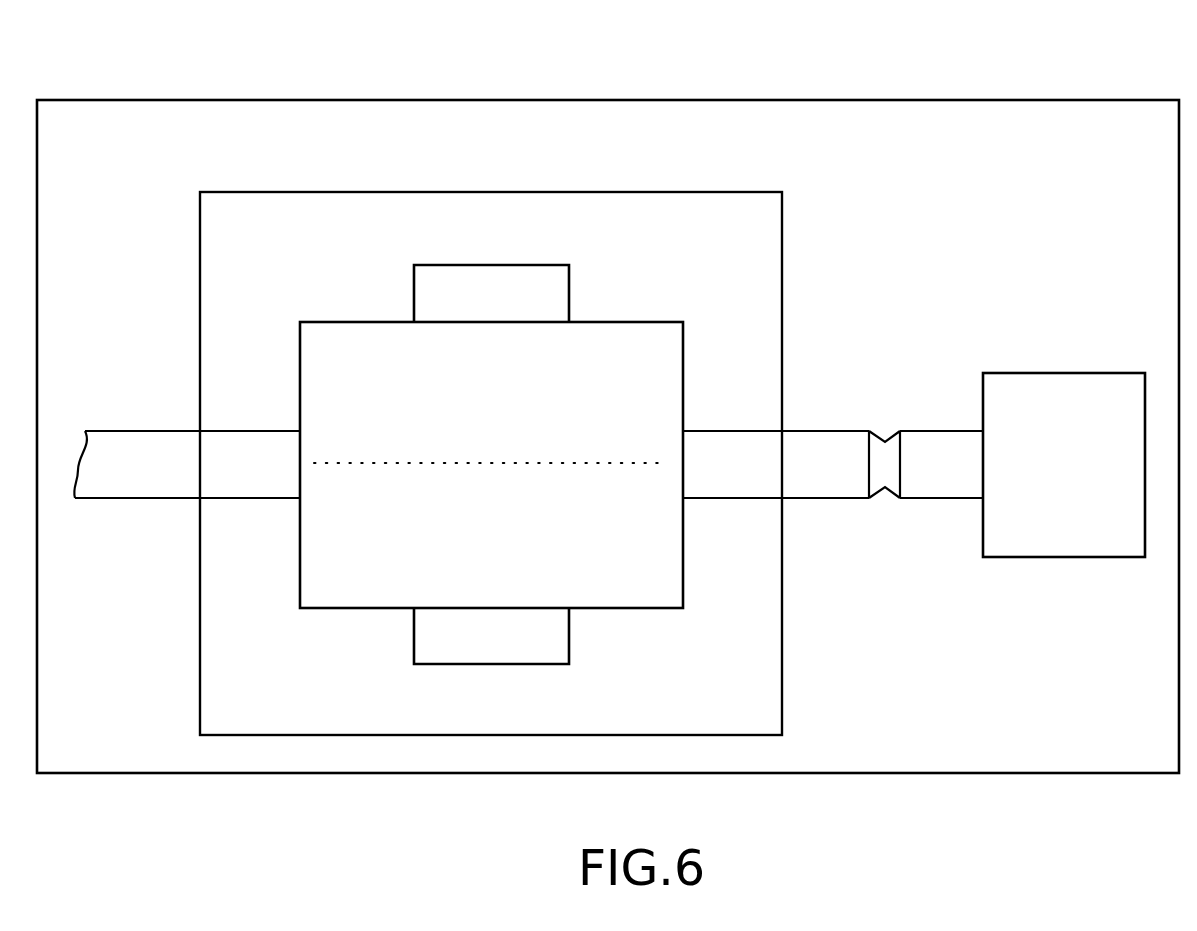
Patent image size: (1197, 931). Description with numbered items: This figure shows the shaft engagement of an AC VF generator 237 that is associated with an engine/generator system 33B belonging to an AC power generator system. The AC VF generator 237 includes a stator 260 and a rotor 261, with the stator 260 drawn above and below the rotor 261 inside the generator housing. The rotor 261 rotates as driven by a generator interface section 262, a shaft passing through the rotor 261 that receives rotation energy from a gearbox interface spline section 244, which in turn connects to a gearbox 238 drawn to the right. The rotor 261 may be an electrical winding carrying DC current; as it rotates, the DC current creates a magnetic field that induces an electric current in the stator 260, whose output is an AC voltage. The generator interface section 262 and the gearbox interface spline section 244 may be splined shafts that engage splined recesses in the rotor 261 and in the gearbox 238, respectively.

The engine/generator system 33B is at (910, 100).
The AC VF generator 237 is at (245, 190).
The rotor 261 is at (340, 320).
The stator 260 is at (570, 277).
The generator interface section 262 is at (243, 430).
The gearbox interface spline section 244 is at (940, 430).
The gearbox 238 is at (1057, 557).